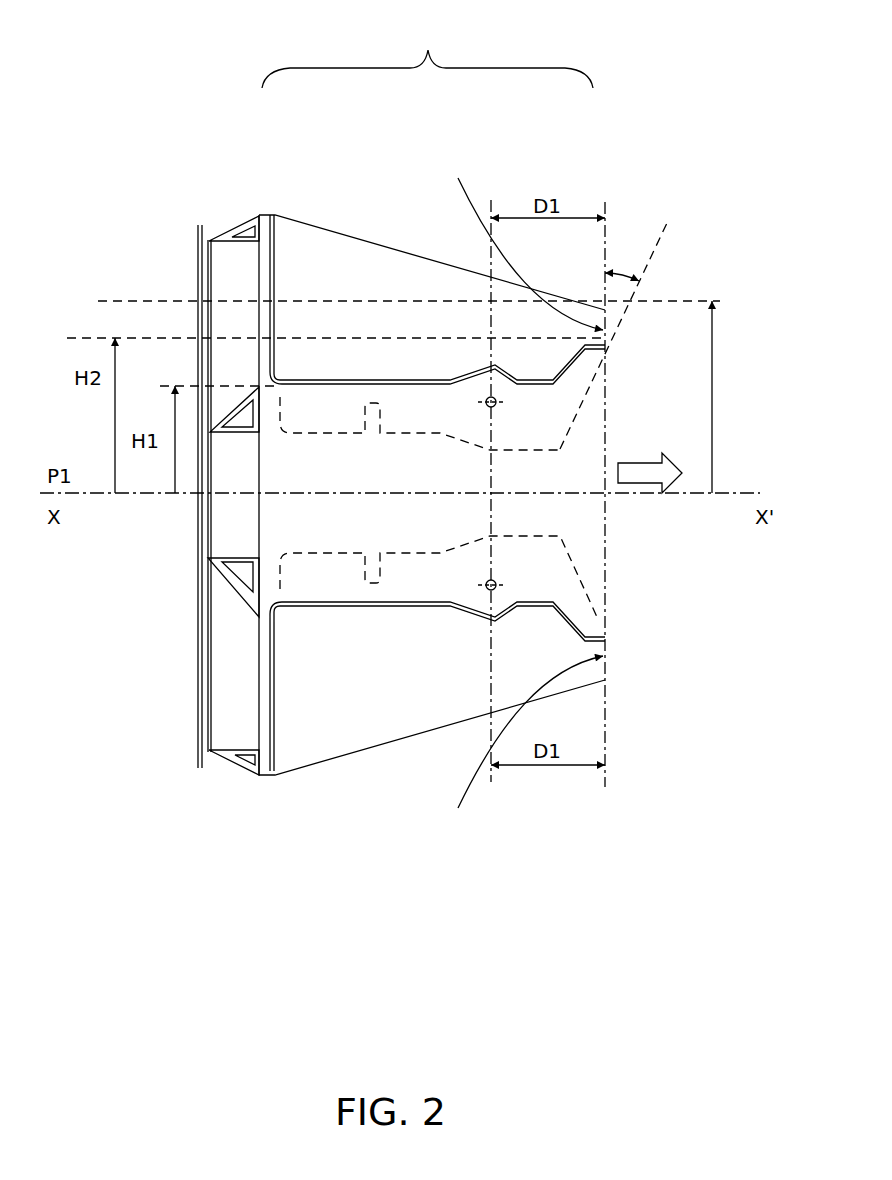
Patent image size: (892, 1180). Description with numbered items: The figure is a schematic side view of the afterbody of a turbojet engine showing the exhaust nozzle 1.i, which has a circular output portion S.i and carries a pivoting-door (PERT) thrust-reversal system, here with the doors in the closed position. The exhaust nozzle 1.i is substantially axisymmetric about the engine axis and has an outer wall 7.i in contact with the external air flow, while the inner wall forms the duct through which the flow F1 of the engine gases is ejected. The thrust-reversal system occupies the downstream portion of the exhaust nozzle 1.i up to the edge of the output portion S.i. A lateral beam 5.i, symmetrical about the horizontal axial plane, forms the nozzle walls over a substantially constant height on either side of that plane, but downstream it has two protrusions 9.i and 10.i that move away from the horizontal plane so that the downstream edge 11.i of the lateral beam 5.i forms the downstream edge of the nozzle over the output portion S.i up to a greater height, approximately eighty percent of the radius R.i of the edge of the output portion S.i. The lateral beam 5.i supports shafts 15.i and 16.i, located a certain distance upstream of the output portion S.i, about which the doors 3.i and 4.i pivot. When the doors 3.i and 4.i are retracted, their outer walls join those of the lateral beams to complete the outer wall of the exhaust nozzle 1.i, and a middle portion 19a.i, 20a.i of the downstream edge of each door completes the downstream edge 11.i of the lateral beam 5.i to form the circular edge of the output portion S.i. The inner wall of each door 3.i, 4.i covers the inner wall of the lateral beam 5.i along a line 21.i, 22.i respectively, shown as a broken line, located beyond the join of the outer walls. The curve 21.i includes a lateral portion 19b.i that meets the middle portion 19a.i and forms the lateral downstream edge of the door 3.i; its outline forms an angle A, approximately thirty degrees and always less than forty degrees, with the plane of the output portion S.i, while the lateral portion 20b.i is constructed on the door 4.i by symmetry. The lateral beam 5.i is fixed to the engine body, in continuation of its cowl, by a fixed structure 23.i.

The exhaust nozzle 1.i is at (427, 52).
The door 3.i is at (330, 265).
The door 4.i is at (337, 707).
The lateral beam 5.i is at (487, 515).
The outer wall 7.i is at (400, 247).
The protrusion 9.i is at (605, 357).
The protrusion 10.i is at (578, 627).
The downstream edge 11.i is at (580, 582).
The shaft 15.i is at (489, 395).
The shaft 16.i is at (489, 592).
The middle portion 19a.i is at (509, 239).
The lateral portion 19b.i is at (585, 393).
The middle portion 20a.i is at (507, 748).
The lateral portion 20b.i is at (565, 553).
The line 21.i is at (410, 435).
The line 22.i is at (410, 555).
The fixed structure 23.i is at (232, 260).
The output portion S.i is at (605, 272).
The radius R.i is at (730, 397).
The angle A is at (622, 262).
The flow F1 is at (650, 460).